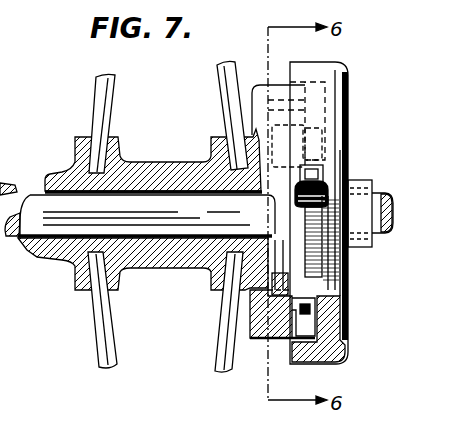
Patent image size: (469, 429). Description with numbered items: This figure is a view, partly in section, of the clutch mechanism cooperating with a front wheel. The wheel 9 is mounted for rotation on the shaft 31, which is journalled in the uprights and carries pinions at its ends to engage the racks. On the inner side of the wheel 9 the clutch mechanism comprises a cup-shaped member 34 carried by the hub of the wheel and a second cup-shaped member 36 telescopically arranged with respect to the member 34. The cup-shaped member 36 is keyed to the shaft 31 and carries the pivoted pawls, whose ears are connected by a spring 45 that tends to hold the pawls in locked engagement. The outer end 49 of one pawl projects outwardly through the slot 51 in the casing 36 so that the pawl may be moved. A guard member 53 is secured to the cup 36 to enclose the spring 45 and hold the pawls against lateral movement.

The wheel 9 is at (112, 100).
The shaft 31 is at (53, 210).
The cup-shaped member 34 is at (261, 341).
The cup-shaped member 36 is at (338, 356).
The spring 45 is at (250, 294).
The outer end of pawl 49 is at (317, 173).
The slot 51 is at (313, 163).
The guard member 53 is at (290, 364).